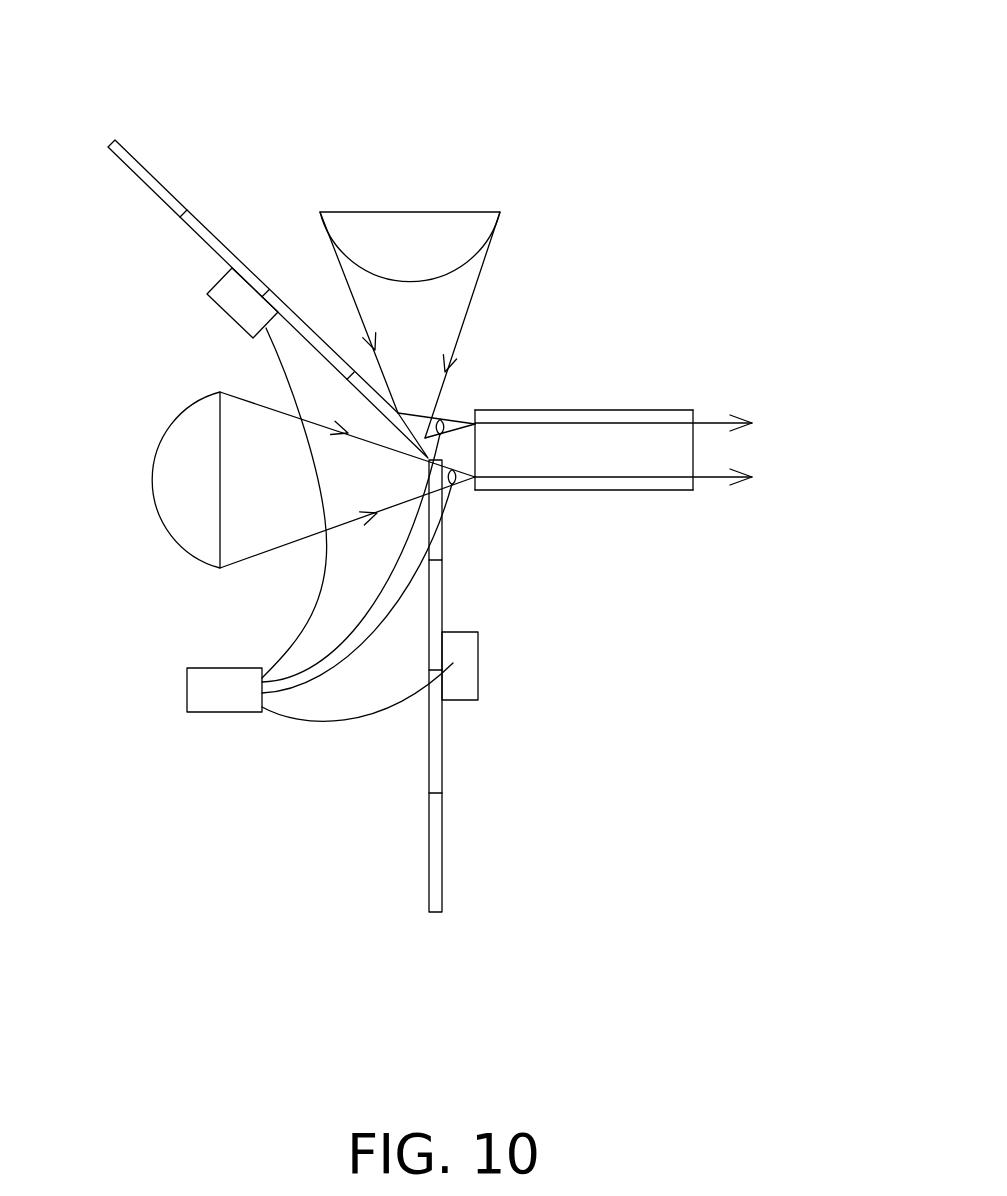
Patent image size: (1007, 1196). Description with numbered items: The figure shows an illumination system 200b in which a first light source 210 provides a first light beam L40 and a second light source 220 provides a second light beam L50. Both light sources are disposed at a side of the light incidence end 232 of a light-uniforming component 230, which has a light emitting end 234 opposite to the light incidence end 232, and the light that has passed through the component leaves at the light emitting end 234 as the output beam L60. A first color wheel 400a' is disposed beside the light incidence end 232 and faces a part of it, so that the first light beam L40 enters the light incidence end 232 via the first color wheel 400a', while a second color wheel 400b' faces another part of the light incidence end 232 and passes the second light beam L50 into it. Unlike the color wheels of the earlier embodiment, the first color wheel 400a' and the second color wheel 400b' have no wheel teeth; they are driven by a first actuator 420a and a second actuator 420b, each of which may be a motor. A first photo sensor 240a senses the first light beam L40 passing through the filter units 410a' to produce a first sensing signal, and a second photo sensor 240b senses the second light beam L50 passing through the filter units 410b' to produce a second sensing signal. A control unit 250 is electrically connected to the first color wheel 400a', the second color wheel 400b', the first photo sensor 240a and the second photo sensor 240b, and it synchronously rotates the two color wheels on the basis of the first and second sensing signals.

The second color wheel 400b' is at (286, 237).
The filter units 410b' is at (197, 168).
The second actuator 420b is at (232, 311).
The second light source 220 is at (426, 152).
The second light beam L50 is at (347, 238).
The first light source 210 is at (162, 466).
The first light beam L40 is at (267, 535).
The second photo sensor 240b is at (446, 421).
The first photo sensor 240a is at (458, 490).
The light-uniforming component 230 is at (577, 443).
The light incidence end 232 is at (480, 455).
The light emitting end 234 is at (697, 412).
The output light beam L60 is at (713, 478).
The filter units 410a' is at (493, 527).
The first color wheel 400a' is at (371, 736).
The first actuator 420a is at (470, 685).
The control unit 250 is at (200, 688).
The illumination system 200b is at (833, 942).